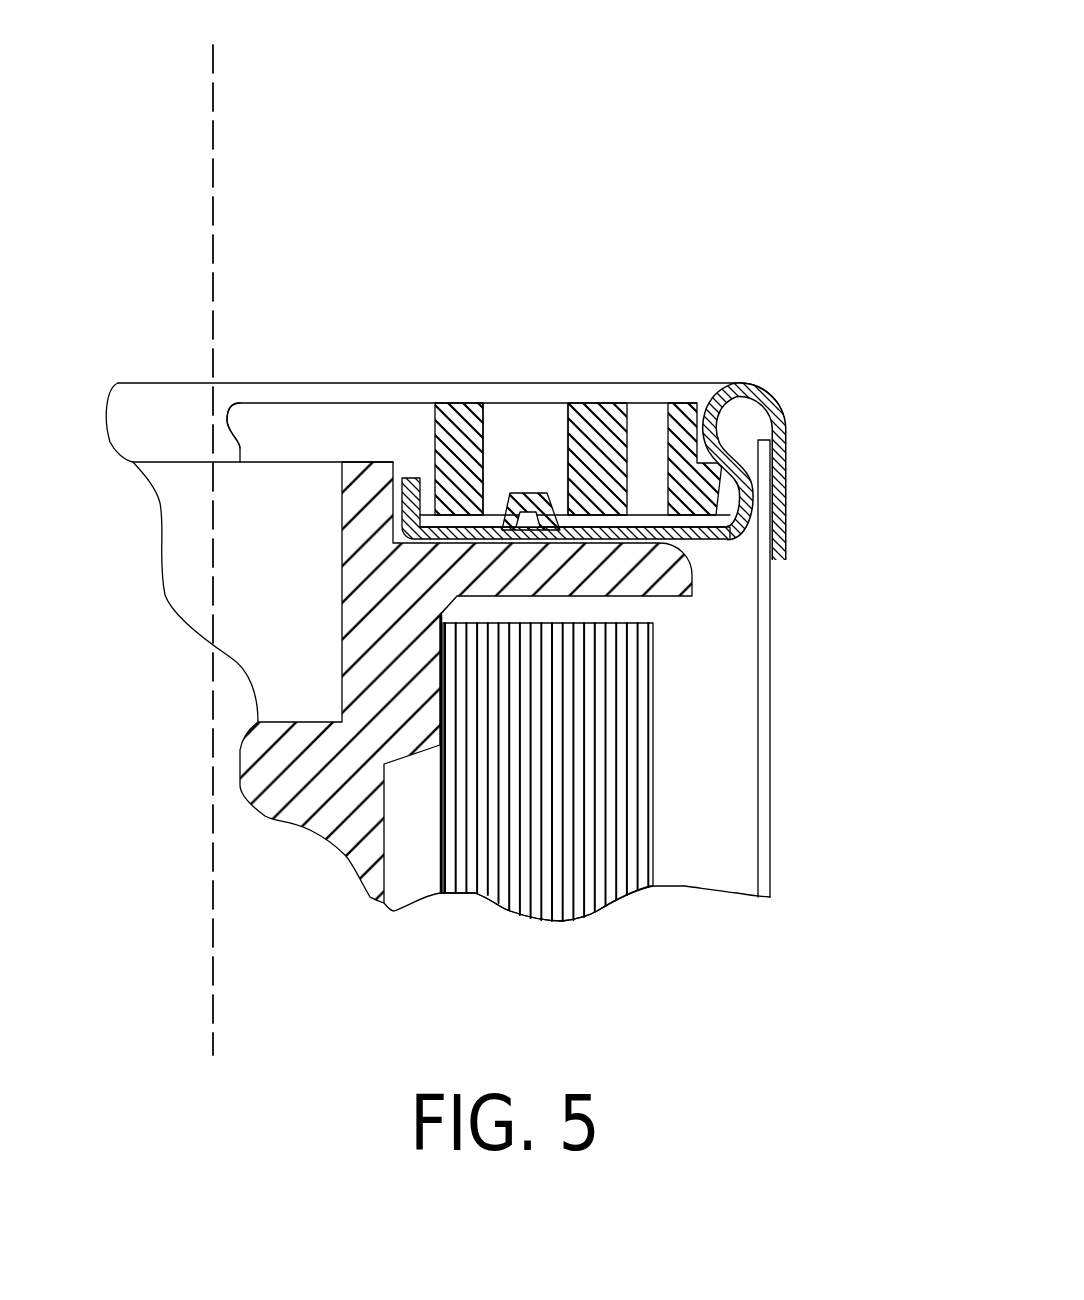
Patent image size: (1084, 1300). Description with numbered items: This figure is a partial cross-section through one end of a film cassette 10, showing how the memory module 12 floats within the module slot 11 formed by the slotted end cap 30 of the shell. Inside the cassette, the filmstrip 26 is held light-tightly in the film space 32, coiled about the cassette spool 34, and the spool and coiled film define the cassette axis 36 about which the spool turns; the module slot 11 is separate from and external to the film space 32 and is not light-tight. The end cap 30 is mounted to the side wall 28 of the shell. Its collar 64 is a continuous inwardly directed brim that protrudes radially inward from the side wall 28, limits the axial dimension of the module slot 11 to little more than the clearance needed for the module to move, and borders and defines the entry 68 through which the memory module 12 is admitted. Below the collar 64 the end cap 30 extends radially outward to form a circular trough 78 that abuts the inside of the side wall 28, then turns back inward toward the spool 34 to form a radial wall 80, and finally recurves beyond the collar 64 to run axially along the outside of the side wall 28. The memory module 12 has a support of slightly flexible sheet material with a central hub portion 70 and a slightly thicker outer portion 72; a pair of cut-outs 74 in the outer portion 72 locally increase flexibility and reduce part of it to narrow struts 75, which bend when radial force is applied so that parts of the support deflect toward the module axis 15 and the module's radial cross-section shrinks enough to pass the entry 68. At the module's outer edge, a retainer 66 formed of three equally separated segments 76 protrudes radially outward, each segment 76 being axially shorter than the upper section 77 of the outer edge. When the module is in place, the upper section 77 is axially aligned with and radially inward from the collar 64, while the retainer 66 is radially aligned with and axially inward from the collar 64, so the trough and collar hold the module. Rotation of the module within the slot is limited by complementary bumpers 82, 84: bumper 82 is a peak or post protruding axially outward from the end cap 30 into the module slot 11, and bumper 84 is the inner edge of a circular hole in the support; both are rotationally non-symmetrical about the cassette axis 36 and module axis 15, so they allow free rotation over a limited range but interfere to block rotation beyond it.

The film cassette 10 is at (651, 100).
The module slot 11 is at (158, 426).
The memory module 12 is at (291, 425).
The module axis 15 is at (222, 95).
The filmstrip 26 is at (600, 920).
The side wall 28 is at (773, 757).
The end cap 30 is at (785, 405).
The film space 32 is at (714, 698).
The cassette spool 34 is at (367, 462).
The cassette axis 36 is at (222, 95).
The collar 64 is at (714, 390).
The retainer 66 is at (785, 452).
The entry 68 is at (722, 425).
The central hub portion 70 is at (273, 463).
The outer portion 72 is at (463, 403).
The cut-outs 74 is at (647, 446).
The struts 75 is at (680, 403).
The segments 76 is at (785, 452).
The upper section 77 is at (758, 415).
The circular trough 78 is at (728, 530).
The radial wall 80 is at (788, 503).
The bumper 82 is at (526, 495).
The bumper 84 is at (490, 437).